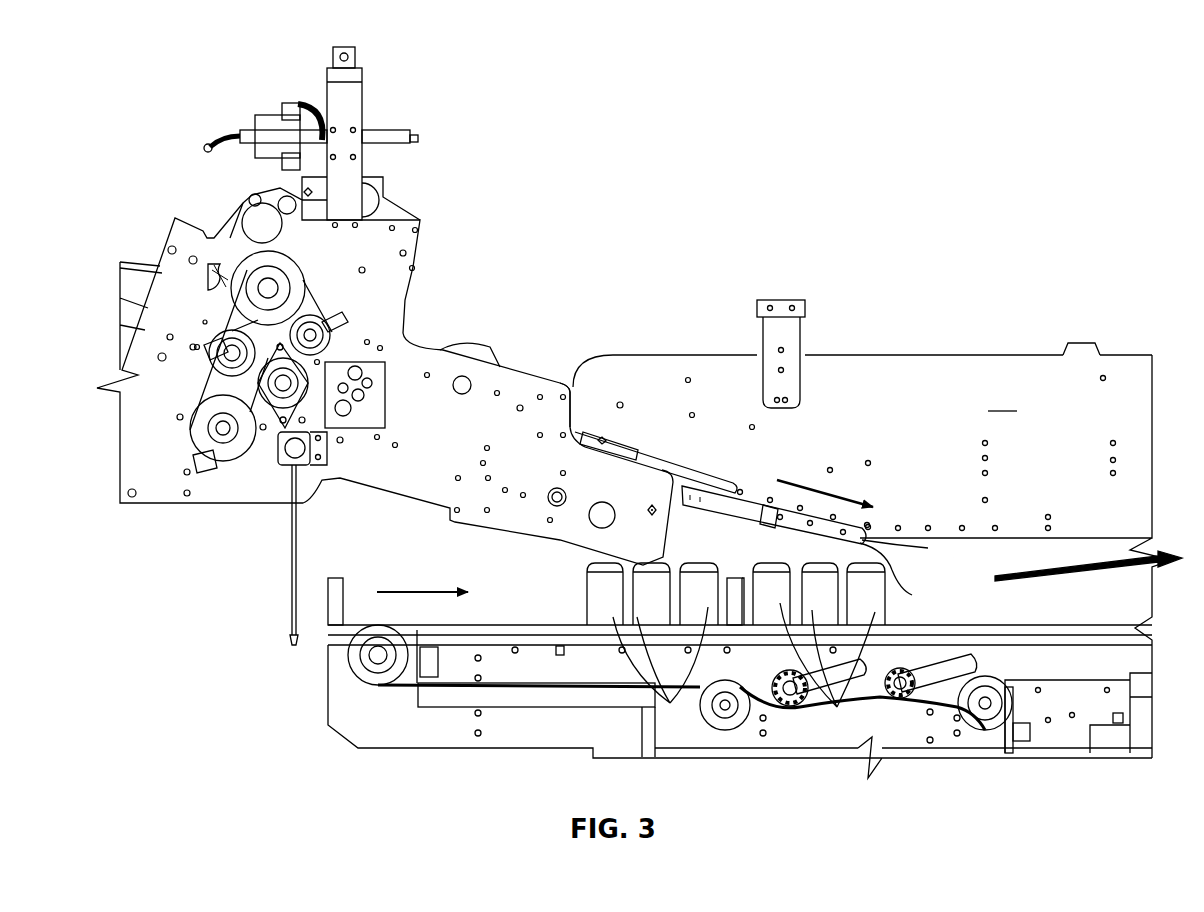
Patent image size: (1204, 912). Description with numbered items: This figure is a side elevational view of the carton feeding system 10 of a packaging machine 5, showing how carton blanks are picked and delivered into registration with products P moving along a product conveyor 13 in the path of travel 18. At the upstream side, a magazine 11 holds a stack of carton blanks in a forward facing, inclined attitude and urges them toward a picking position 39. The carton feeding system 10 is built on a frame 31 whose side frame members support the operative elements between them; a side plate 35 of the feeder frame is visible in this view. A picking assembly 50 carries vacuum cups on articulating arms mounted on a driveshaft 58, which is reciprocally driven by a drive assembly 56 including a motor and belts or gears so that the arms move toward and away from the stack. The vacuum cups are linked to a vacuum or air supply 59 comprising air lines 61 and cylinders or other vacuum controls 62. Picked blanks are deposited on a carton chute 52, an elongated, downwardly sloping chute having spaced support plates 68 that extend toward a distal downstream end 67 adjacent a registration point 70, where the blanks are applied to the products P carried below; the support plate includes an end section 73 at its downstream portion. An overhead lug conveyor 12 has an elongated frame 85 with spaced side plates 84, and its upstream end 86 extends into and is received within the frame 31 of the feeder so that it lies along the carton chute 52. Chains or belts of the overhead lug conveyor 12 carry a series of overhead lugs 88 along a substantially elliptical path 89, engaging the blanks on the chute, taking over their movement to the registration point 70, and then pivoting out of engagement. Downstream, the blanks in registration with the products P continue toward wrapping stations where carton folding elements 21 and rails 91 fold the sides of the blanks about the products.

The packaging machine 5 is at (816, 111).
The carton feeding system 10 is at (530, 294).
The magazine 11 is at (129, 254).
The overhead lug conveyor 12 is at (881, 376).
The product conveyor 13 is at (533, 662).
The path of travel 18 is at (430, 593).
The carton folding elements 21 is at (1076, 521).
The frame 31 is at (556, 374).
The side plate 35 is at (513, 367).
The picking position 39 is at (162, 263).
The picking assembly 50 is at (401, 189).
The carton chute 52 is at (683, 540).
The drive assembly 56 is at (236, 474).
The driveshaft 58 is at (213, 240).
The vacuum or air supply 59 is at (300, 117).
The air lines 61 is at (229, 133).
The vacuum controls 62 is at (396, 137).
The downstream end 67 is at (903, 544).
The support plates 68 is at (693, 513).
The registration point 70 is at (934, 547).
The end section 73 is at (857, 536).
The side plates 84 is at (977, 355).
The elongated frame 85 is at (1003, 399).
The upstream end 86 is at (605, 375).
The overhead lugs 88 is at (1080, 343).
The elliptical path 89 is at (830, 497).
The rails 91 is at (1100, 558).
The products P is at (744, 674).